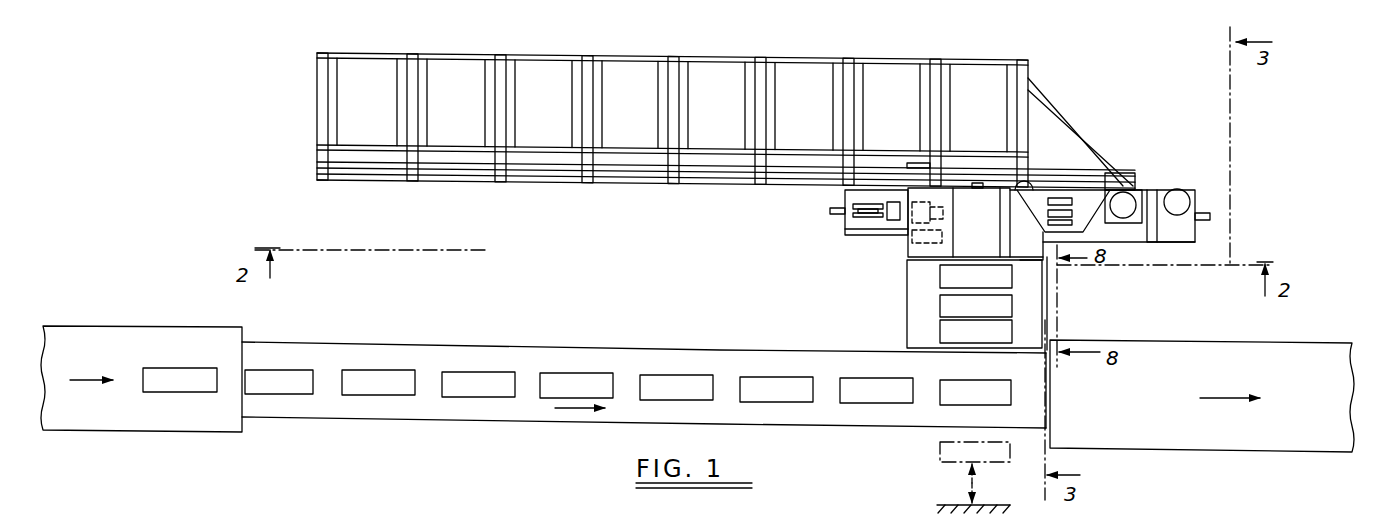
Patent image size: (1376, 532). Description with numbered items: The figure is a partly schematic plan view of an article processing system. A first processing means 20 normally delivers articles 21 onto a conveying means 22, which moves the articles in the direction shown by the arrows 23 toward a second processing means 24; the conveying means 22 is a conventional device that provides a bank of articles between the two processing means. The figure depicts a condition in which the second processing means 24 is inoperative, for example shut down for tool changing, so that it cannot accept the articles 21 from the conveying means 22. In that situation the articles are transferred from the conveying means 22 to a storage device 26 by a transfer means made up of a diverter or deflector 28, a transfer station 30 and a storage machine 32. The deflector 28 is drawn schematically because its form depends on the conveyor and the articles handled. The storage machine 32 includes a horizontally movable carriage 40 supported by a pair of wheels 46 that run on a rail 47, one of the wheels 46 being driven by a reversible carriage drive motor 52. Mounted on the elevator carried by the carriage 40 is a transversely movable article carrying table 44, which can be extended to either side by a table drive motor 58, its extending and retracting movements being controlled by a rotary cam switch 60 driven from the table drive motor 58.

The first processing means 20 is at (223, 437).
The articles 21 is at (183, 393).
The conveying means 22 is at (863, 428).
The arrows 23 is at (572, 408).
The second processing means 24 is at (1187, 453).
The storage device 26 is at (310, 134).
The deflector 28 is at (947, 465).
The transfer station 30 is at (903, 303).
The storage machine 32 is at (900, 250).
The carriage 40 is at (1145, 244).
The article carrying table 44 is at (975, 222).
The wheels 46 is at (867, 203).
The rail 47 is at (830, 212).
The carriage drive motor 52 is at (1179, 190).
The table drive motor 58 is at (897, 218).
The cam switch 60 is at (917, 265).